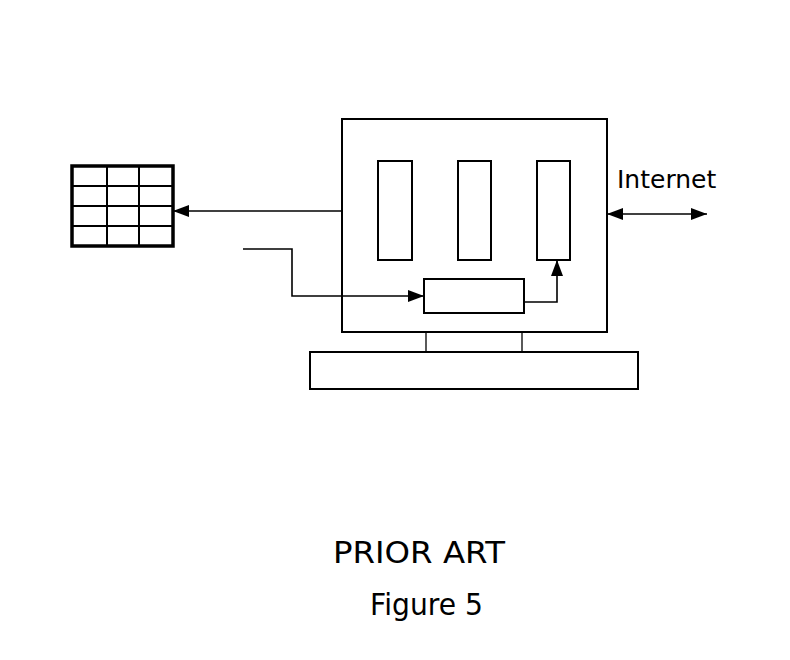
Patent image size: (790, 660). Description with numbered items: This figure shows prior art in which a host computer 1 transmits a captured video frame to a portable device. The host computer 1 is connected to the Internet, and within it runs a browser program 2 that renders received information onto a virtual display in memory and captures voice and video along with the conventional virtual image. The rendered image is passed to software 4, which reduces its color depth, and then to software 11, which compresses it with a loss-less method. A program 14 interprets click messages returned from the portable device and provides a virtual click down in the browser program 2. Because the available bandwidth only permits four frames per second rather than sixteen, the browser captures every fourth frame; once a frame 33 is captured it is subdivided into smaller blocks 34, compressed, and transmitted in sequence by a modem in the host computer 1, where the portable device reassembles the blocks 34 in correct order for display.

The host computer 1 is at (518, 380).
The browser program 2 is at (560, 167).
The software 4 is at (470, 168).
The software 11 is at (393, 167).
The program 14 is at (458, 307).
The frame 33 is at (137, 247).
The blocks 34 is at (88, 178).